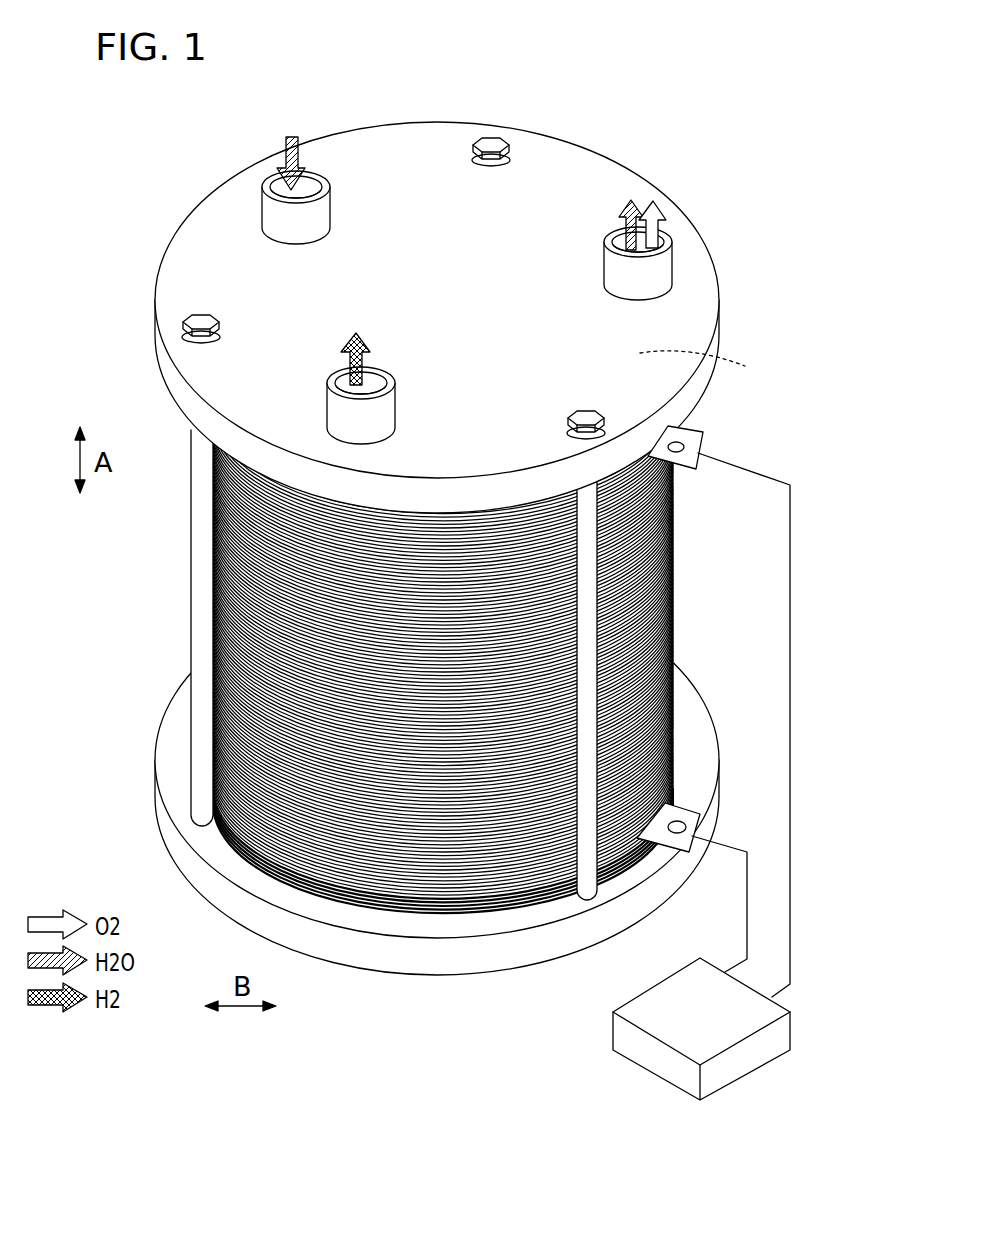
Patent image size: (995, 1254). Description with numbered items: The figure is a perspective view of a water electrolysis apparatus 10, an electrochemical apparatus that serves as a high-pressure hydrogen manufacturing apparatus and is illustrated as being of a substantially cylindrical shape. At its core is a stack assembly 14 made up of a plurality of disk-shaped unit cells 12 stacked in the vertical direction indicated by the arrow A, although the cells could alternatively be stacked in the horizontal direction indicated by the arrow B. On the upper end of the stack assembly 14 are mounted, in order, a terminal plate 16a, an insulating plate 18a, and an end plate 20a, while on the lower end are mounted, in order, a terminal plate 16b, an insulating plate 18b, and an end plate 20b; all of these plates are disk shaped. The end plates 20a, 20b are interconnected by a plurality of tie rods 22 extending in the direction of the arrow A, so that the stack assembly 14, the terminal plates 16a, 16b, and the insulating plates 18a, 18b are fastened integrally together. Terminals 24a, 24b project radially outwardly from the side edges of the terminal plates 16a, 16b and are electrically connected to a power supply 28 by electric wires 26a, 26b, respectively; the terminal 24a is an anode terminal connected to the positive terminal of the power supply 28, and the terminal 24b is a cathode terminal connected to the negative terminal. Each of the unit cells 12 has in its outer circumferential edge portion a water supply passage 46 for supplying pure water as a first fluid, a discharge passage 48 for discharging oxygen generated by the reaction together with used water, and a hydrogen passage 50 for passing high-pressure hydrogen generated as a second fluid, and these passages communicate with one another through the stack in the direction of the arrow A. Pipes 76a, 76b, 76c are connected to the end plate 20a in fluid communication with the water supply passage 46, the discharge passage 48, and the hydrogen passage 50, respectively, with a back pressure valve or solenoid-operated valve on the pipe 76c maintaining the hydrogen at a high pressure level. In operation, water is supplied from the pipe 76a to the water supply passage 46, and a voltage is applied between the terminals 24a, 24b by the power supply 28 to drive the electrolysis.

The water electrolysis apparatus 10 is at (143, 149).
The unit cell 12 is at (228, 580).
The stack assembly 14 is at (371, 709).
The terminal plate 16a is at (718, 382).
The terminal plate 16b is at (498, 899).
The insulating plate 18a is at (718, 382).
The insulating plate 18b is at (458, 907).
The end plate 20a is at (598, 150).
The end plate 20b is at (707, 709).
The tie rod 22 is at (590, 899).
The terminal 24a is at (711, 443).
The terminal 24b is at (681, 833).
The electric wire 26a is at (790, 772).
The electric wire 26b is at (747, 852).
The power supply 28 is at (643, 1010).
The water supply passage 46 is at (322, 218).
The discharge passage 48 is at (612, 276).
The hydrogen passage 50 is at (392, 405).
The pipe 76a is at (338, 200).
The pipe 76b is at (594, 253).
The pipe 76c is at (386, 374).